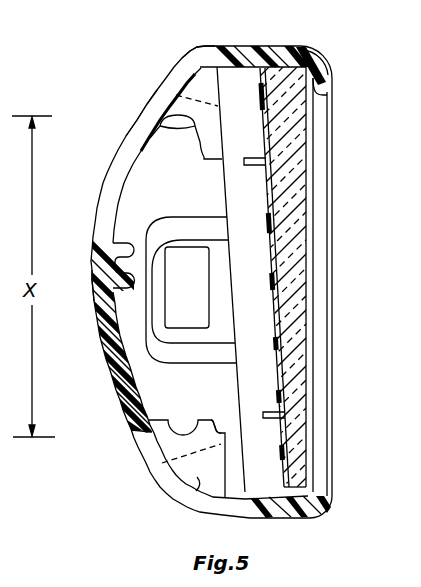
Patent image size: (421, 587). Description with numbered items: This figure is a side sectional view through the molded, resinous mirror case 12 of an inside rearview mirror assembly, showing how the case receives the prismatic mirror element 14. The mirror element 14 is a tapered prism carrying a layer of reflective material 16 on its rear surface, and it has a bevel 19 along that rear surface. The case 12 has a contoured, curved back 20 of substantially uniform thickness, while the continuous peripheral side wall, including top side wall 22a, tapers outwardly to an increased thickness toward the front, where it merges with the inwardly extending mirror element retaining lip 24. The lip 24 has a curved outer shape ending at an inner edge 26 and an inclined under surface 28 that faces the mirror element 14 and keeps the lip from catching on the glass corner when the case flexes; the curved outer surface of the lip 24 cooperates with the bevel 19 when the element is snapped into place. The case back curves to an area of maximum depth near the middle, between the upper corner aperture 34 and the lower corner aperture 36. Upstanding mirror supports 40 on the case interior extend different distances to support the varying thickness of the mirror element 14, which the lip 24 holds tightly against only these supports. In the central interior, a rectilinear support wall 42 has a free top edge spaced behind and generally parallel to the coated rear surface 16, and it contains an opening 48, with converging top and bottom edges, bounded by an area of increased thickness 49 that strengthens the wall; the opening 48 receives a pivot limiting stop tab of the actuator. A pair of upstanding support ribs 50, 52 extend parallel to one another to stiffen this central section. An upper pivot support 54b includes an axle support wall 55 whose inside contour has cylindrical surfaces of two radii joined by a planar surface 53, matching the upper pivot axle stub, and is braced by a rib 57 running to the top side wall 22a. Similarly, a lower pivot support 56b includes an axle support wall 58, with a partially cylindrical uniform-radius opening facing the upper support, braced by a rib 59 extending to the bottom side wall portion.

The mirror case 12 is at (150, 76).
The mirror element 14 is at (290, 192).
The layer of reflective material 16 is at (323, 151).
The bevel 19 is at (271, 69).
The case back 20 is at (95, 281).
The top side wall 22a is at (303, 44).
The mirror element retaining lip 24 is at (327, 72).
The inner edge 26 is at (333, 100).
The inclined under surface 28 is at (318, 472).
The upper corner aperture 34 is at (212, 47).
The lower corner aperture 36 is at (138, 435).
The mirror support 40 is at (249, 156).
The support wall 42 is at (176, 399).
The opening 48 is at (173, 247).
The area of increased thickness 49 is at (197, 226).
The support rib 50 is at (113, 242).
The support rib 52 is at (100, 308).
The planar surface 53 is at (157, 118).
The pivot support 54b is at (178, 106).
The axle support wall 55 is at (203, 150).
The lower pivot support 56b is at (174, 476).
The rib 57 is at (242, 50).
The axle support wall 58 is at (217, 398).
The rib 59 is at (197, 494).